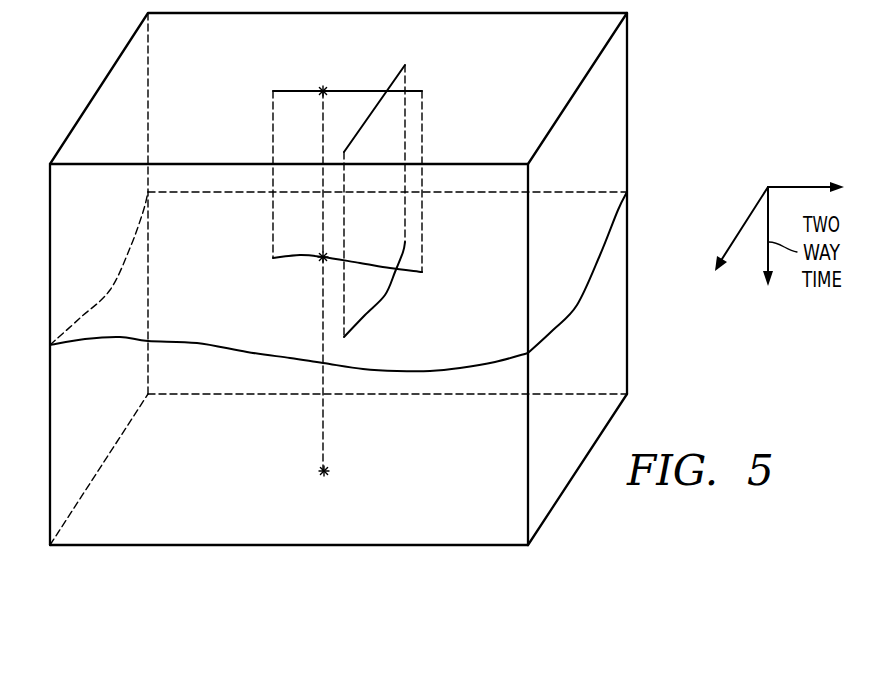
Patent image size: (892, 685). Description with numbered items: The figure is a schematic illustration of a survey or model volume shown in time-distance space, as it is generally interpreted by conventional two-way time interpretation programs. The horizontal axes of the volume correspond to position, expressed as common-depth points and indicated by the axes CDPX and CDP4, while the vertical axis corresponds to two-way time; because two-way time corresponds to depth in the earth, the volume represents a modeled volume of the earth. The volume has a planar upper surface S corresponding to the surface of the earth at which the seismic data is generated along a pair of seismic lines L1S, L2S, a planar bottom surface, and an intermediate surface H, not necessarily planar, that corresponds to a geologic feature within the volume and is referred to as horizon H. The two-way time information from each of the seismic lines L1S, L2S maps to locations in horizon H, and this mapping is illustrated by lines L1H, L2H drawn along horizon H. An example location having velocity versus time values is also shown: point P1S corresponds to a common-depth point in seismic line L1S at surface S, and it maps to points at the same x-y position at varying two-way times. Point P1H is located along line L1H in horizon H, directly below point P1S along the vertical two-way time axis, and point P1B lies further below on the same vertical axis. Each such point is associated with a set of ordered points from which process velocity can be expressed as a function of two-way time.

The upper surface S is at (97, 90).
The horizon H is at (105, 341).
The first seismic line L1S is at (290, 89).
The first horizon line L1H is at (347, 263).
The second seismic line L2S is at (397, 77).
The second horizon line L2H is at (384, 297).
The surface point P1S is at (323, 85).
The horizon point P1H is at (319, 260).
The point P1 at bottom P1B is at (319, 471).
The CDP X axis CDPX is at (797, 186).
The CDP 4 axis CDP4 is at (742, 227).